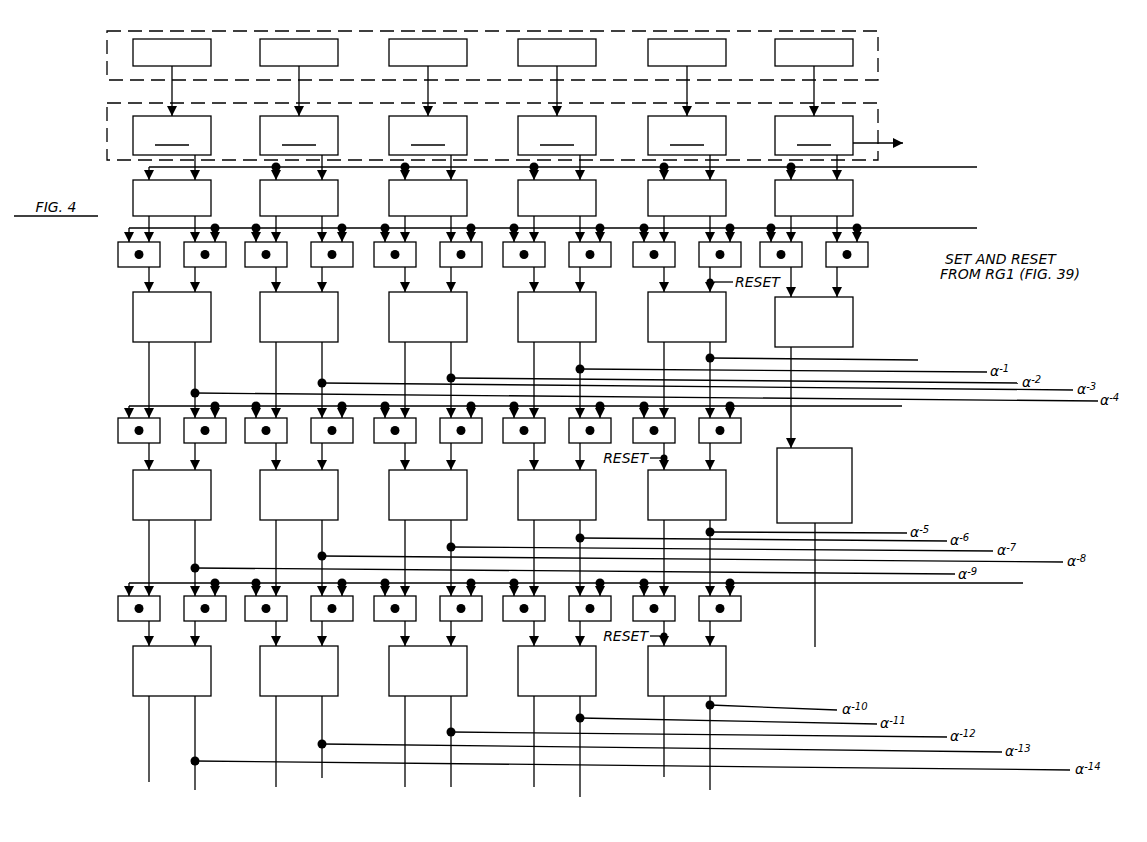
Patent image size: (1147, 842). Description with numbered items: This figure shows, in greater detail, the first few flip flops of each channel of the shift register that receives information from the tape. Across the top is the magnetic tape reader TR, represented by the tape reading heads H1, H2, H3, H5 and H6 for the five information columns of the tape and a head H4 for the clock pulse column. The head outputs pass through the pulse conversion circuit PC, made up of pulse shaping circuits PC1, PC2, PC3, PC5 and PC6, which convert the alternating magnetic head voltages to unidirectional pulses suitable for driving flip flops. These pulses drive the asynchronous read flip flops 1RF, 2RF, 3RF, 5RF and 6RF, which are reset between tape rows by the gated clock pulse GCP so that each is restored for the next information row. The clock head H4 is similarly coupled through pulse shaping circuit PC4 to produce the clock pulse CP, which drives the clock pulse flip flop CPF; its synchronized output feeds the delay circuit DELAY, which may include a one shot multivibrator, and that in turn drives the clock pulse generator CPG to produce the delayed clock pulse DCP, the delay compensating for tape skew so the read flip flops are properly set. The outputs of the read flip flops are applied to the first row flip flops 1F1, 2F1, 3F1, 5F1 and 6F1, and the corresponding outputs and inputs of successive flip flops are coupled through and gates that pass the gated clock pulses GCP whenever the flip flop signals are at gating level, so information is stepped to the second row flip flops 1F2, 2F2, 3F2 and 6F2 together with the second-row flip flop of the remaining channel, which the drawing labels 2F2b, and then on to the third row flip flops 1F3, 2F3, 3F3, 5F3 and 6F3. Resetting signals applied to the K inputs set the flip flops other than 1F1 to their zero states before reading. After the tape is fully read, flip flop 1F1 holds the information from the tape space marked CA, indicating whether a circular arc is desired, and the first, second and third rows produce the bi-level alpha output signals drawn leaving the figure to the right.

The magnetic tape reader TR is at (878, 75).
The pulse conversion circuit PC is at (872, 128).
The clock pulse CP is at (890, 143).
The gated clock pulse GCP is at (593, 375).
The circular arc information space CA is at (824, 359).
The clock pulse generator CPG is at (855, 488).
The delayed clock pulse DCP is at (816, 640).
The tape reading head H6 is at (172, 52).
The tape reading head H5 is at (299, 52).
The tape reading head H3 is at (428, 52).
The tape reading head H2 is at (557, 52).
The tape reading head H1 is at (687, 52).
The clock pulse read head H4 is at (814, 52).
The pulse shaping circuit PC6 is at (172, 135).
The pulse shaping circuit PC5 is at (299, 135).
The pulse shaping circuit PC3 is at (428, 135).
The pulse shaping circuit PC2 is at (557, 135).
The pulse shaping circuit PC1 is at (687, 135).
The pulse shaping circuit PC4 is at (814, 135).
The read flip flop 6RF is at (172, 198).
The read flip flop 5RF is at (299, 198).
The read flip flop 3RF is at (428, 198).
The read flip flop 2RF is at (557, 198).
The read flip flop 1RF is at (687, 198).
The clock pulse driven flip flop CPF is at (814, 198).
The shift register flip flop 6F1 is at (172, 317).
The shift register flip flop 5F1 is at (299, 317).
The shift register flip flop 3F1 is at (428, 317).
The shift register flip flop 2F1 is at (557, 317).
The shift register flip flop 1F1 is at (687, 317).
The delay circuit DELAY is at (814, 322).
The shift register flip flop 6F2 is at (172, 495).
The shift register flip flop 2F2 is at (299, 495).
The flip-flop 2F2 (second) 2F2b is at (557, 495).
The shift register flip flop 3F2 is at (428, 495).
The shift register flip flop 1F2 is at (687, 495).
The shift register flip flop 6F3 is at (172, 671).
The shift register flip flop 5F3 is at (299, 671).
The shift register flip flop 3F3 is at (428, 671).
The shift register flip flop 2F3 is at (557, 671).
The shift register flip flop 1F3 is at (687, 671).